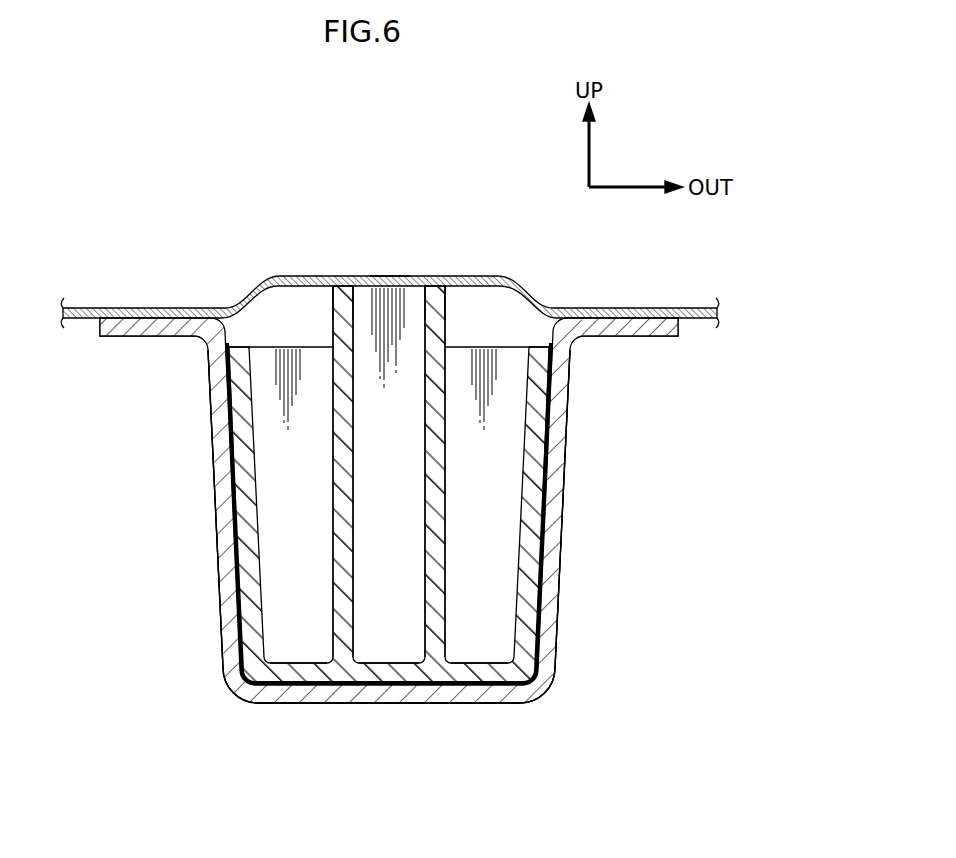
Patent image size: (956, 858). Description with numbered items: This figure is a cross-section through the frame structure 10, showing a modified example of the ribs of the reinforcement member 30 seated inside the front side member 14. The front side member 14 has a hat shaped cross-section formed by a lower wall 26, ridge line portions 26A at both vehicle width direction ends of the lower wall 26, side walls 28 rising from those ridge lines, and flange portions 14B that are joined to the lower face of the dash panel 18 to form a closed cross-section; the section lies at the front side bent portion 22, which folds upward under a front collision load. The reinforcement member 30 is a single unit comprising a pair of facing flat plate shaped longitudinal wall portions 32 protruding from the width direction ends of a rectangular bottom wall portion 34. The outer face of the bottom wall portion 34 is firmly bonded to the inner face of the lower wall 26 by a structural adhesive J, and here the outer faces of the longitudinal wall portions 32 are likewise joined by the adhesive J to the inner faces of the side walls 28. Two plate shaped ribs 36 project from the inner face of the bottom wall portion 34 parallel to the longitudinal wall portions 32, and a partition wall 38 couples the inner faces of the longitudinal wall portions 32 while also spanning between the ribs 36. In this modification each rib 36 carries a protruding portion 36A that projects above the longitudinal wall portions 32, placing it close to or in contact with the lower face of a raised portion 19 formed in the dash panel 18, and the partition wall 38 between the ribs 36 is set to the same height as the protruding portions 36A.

The frame structure 10 is at (208, 640).
The front side member 14 is at (368, 708).
The flange portion 14B is at (118, 337).
The dash panel 18 is at (128, 307).
The raised portion 19 is at (390, 276).
The front side bent portion 22 is at (488, 700).
The lower wall 26 is at (288, 704).
The ridge line portion 26A is at (233, 690).
The side wall 28 is at (215, 492).
The reinforcement member 30 is at (519, 343).
The longitudinal wall portion 32 is at (243, 452).
The bottom wall portion 34 is at (382, 667).
The rib 36 is at (340, 481).
The protruding portion 36A is at (332, 300).
The partition wall 38 is at (262, 358).
The structural adhesive J is at (240, 523).